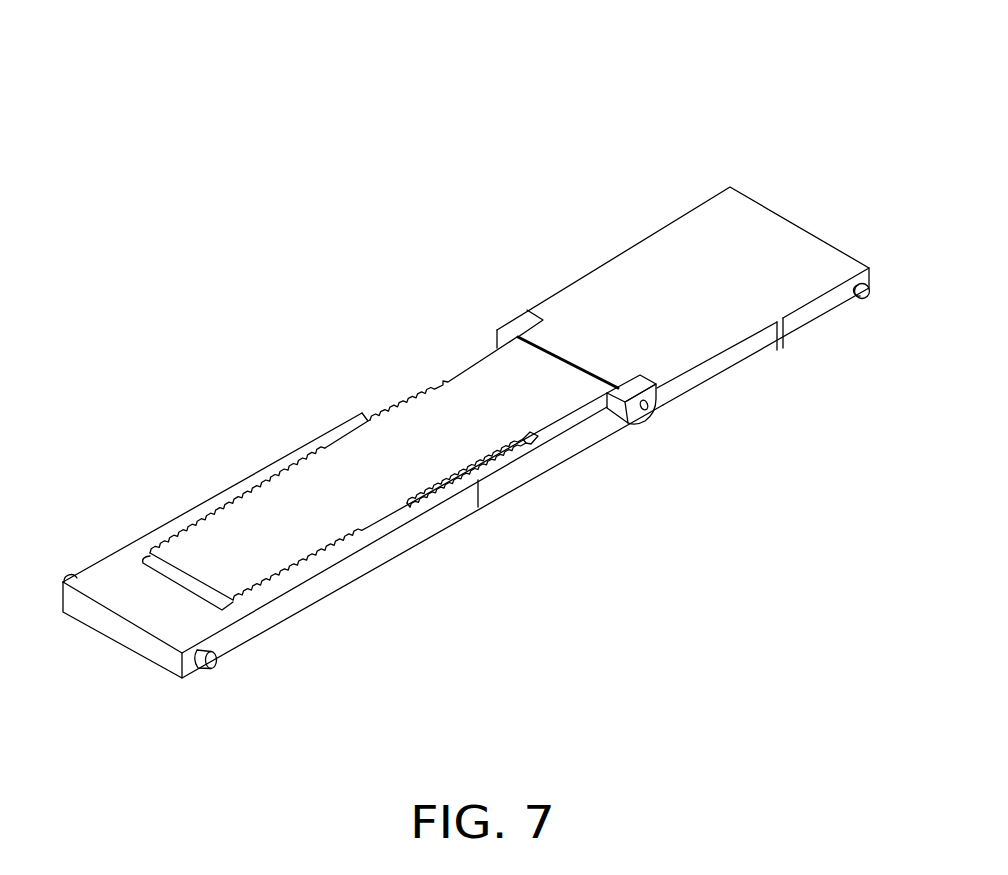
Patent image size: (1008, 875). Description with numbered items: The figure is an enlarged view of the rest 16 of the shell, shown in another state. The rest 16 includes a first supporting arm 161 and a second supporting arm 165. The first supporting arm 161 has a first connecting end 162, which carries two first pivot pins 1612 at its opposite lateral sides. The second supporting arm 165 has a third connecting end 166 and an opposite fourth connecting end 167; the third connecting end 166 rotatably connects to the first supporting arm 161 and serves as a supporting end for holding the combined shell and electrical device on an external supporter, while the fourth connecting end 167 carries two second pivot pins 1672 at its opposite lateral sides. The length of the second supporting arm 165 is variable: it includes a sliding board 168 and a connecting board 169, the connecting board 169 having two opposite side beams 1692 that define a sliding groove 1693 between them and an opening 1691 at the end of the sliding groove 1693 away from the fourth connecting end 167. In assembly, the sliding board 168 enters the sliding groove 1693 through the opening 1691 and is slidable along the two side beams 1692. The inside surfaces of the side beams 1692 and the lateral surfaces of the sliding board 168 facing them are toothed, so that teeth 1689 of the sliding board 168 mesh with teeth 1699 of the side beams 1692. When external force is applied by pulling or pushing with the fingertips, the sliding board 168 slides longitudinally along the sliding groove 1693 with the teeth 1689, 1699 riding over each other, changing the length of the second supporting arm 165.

The rest 16 is at (405, 69).
The first supporting arm 161 is at (680, 250).
The first connecting end 162 is at (765, 207).
The first pivot pins 1612 is at (868, 300).
The second supporting arm 165 is at (278, 345).
The third connecting end 166 is at (515, 323).
The fourth connecting end 167 is at (115, 625).
The second pivot pins 1672 is at (215, 666).
The sliding board 168 is at (430, 440).
The connecting board 169 is at (270, 470).
The teeth 1689 is at (528, 443).
The opening 1691 is at (470, 474).
The side beams 1692 is at (370, 528).
The sliding groove 1693 is at (167, 570).
The teeth 1699 is at (342, 445).